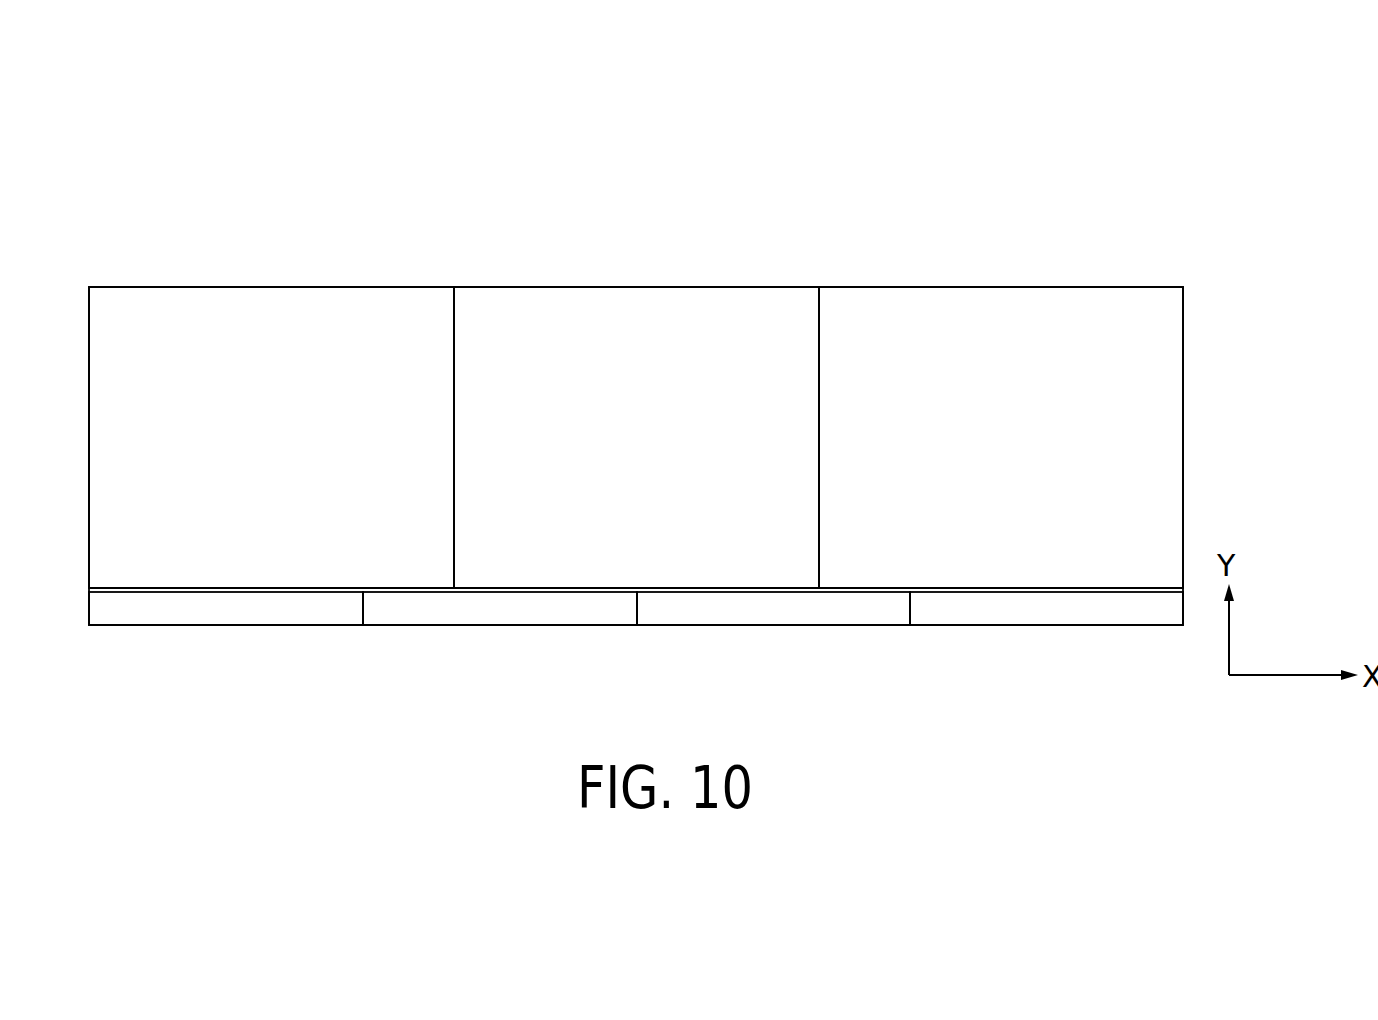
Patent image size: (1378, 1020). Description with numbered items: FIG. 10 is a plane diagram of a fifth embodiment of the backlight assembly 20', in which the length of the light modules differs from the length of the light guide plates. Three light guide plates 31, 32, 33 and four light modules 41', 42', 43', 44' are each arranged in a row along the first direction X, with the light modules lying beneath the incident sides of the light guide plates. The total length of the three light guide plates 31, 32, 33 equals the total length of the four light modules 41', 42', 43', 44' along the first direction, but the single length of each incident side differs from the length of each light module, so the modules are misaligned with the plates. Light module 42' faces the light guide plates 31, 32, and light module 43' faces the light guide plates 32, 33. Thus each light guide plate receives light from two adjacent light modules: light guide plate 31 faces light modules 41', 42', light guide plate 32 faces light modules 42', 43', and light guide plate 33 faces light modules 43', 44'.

The touch panel 20' is at (685, 345).
The light guide plate 31 is at (272, 308).
The light guide plate 32 is at (638, 310).
The light guide plate 33 is at (1003, 310).
The light module 41' is at (226, 654).
The light module 42' is at (500, 654).
The light module 43' is at (773, 654).
The light module 44' is at (1046, 654).